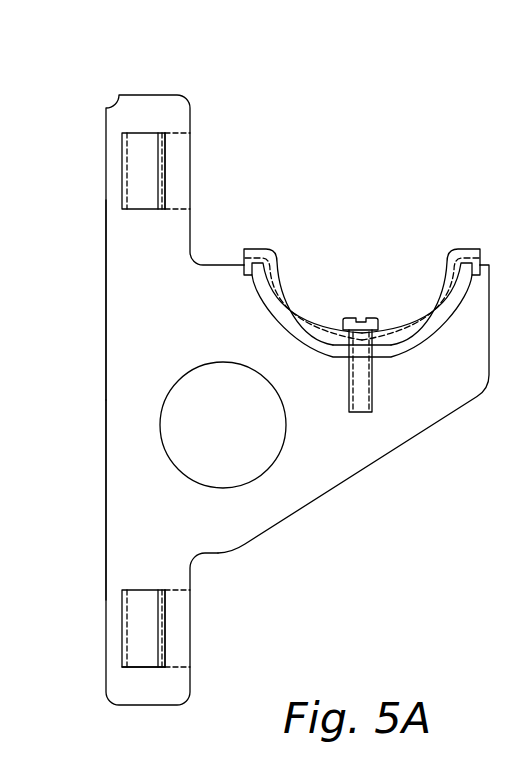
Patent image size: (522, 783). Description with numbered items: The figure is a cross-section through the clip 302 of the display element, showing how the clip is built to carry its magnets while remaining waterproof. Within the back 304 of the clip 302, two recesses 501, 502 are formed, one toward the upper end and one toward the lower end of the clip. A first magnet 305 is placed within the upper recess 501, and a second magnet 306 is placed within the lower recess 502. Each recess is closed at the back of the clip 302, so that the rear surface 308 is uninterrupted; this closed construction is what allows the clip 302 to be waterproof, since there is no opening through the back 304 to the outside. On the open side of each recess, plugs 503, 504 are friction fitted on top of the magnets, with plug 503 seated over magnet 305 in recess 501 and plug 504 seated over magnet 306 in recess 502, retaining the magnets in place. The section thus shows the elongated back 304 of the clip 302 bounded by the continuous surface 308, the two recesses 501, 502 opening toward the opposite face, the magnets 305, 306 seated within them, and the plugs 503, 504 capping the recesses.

The recess 501 is at (148, 100).
The clip 302 is at (343, 468).
The back 304 is at (107, 470).
The magnet 305 is at (138, 162).
The magnet 306 is at (128, 622).
The surface 308 is at (107, 302).
The recess 502 is at (143, 667).
The plug 503 is at (184, 157).
The plug 504 is at (185, 627).